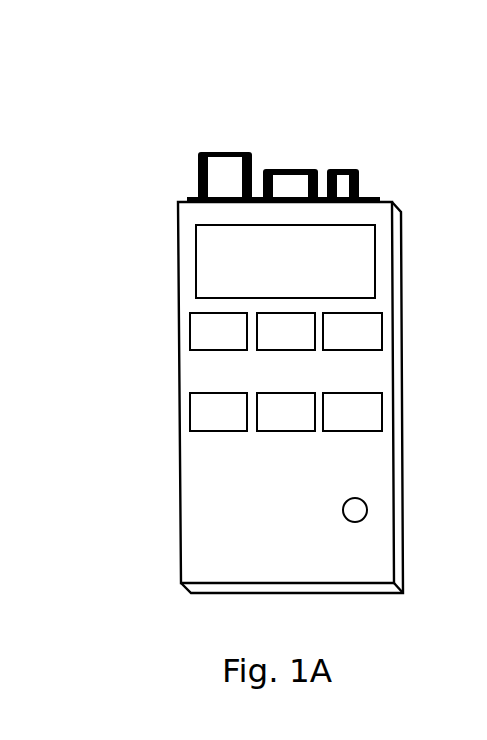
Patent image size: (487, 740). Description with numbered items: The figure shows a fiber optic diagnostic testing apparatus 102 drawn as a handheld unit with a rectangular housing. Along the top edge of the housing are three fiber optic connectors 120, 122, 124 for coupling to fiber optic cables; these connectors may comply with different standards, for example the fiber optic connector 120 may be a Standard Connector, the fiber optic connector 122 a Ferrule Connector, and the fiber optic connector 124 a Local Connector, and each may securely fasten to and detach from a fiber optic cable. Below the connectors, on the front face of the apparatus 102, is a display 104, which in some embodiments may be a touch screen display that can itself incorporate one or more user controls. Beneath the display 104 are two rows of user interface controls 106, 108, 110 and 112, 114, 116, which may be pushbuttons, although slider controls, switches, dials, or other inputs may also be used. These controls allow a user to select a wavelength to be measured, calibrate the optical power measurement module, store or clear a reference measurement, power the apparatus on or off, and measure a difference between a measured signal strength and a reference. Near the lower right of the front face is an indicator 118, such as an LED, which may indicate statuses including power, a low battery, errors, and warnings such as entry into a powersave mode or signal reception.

The fiber optic diagnostic testing apparatus 102 is at (178, 462).
The display 104 is at (196, 270).
The user interface control 106 is at (218, 331).
The user interface control 108 is at (286, 331).
The user interface control 110 is at (352, 331).
The user interface control 112 is at (218, 412).
The user interface control 114 is at (286, 412).
The user interface control 116 is at (352, 412).
The indicator 118 is at (367, 509).
The fiber optic connector 120 is at (223, 157).
The fiber optic connector 122 is at (292, 175).
The fiber optic connector 124 is at (340, 175).